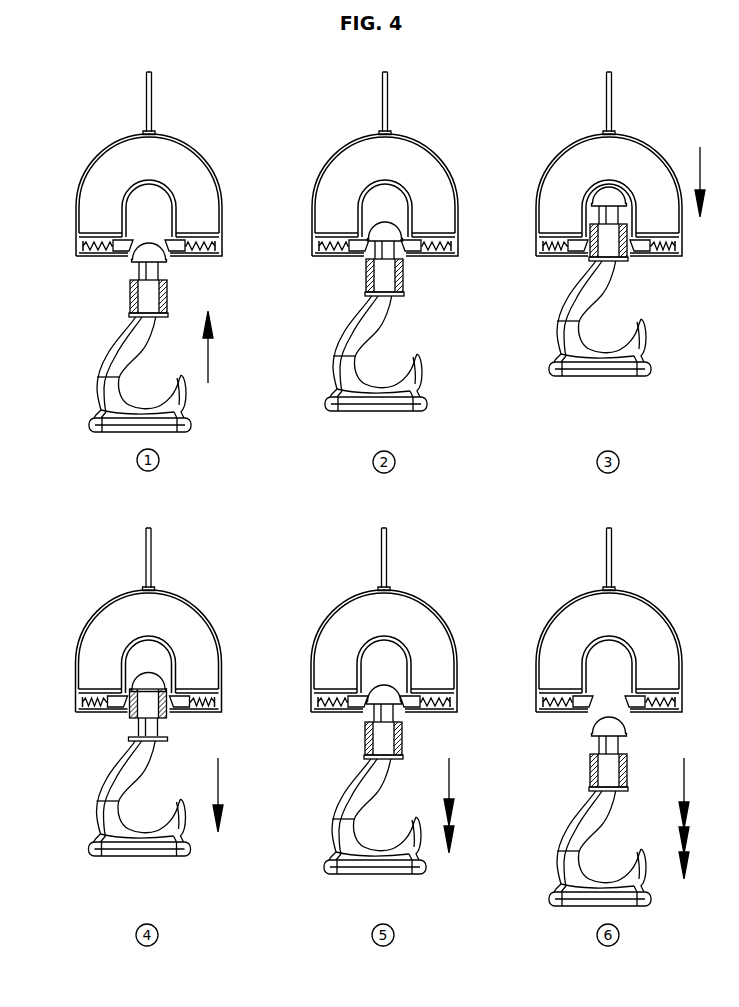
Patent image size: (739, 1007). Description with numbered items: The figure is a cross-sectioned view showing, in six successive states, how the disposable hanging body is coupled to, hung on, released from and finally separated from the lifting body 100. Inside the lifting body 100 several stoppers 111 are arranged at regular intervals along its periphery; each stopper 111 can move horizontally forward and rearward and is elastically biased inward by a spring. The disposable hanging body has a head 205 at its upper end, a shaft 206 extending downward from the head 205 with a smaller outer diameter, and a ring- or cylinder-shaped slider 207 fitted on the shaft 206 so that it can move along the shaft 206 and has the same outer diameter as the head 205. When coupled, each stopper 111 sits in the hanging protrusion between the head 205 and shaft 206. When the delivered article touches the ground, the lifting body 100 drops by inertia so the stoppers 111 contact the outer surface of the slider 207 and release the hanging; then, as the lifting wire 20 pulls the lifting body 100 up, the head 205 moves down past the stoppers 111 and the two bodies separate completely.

The lifting wire 20 is at (151, 95).
The lifting body 100 is at (98, 155).
The stopper 111 is at (122, 246).
The head 205 is at (140, 254).
The shaft 206 is at (157, 273).
The slider 207 is at (131, 295).